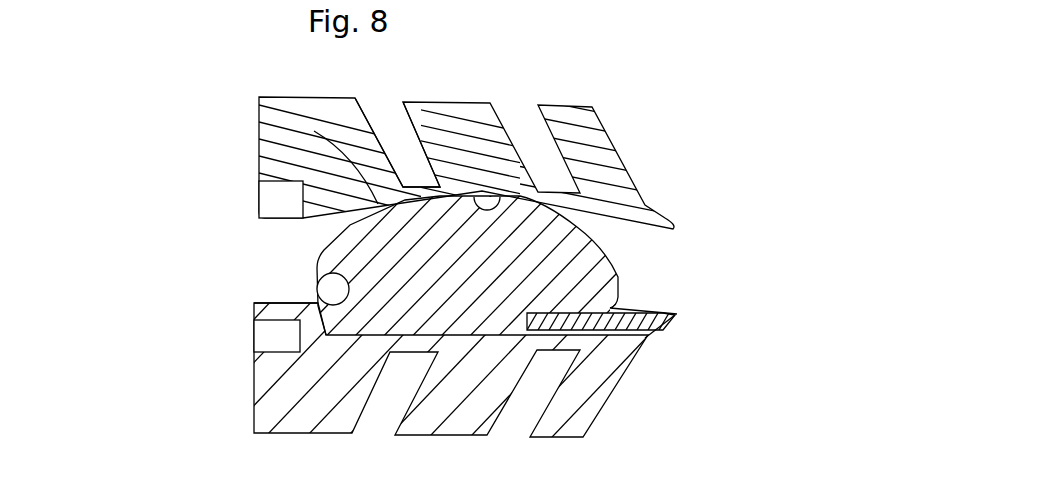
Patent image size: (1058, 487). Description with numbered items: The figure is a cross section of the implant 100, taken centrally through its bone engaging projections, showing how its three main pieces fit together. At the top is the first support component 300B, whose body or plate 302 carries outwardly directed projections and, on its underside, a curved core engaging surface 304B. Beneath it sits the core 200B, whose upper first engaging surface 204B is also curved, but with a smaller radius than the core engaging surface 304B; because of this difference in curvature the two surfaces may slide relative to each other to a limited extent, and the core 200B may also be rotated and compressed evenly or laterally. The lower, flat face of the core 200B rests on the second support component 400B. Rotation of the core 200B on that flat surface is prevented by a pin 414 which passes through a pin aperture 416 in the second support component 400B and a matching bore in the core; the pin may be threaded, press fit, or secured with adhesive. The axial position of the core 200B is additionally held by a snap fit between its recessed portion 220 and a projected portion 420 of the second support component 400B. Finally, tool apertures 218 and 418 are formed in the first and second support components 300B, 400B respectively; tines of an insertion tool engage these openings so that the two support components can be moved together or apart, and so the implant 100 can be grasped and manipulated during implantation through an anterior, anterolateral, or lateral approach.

The implant 100 is at (767, 162).
The core 200B is at (512, 190).
The first engaging surface 204B is at (503, 195).
The tool aperture 218 is at (267, 195).
The recessed portion 220 is at (320, 283).
The first support component 300B is at (460, 161).
The plate 302 is at (663, 211).
The core engaging surface 304B is at (267, 128).
The second support component 400B is at (451, 352).
The pin 414 is at (630, 348).
The pin aperture 416 is at (688, 320).
The tool aperture 418 is at (268, 328).
The projected portion 420 is at (285, 301).